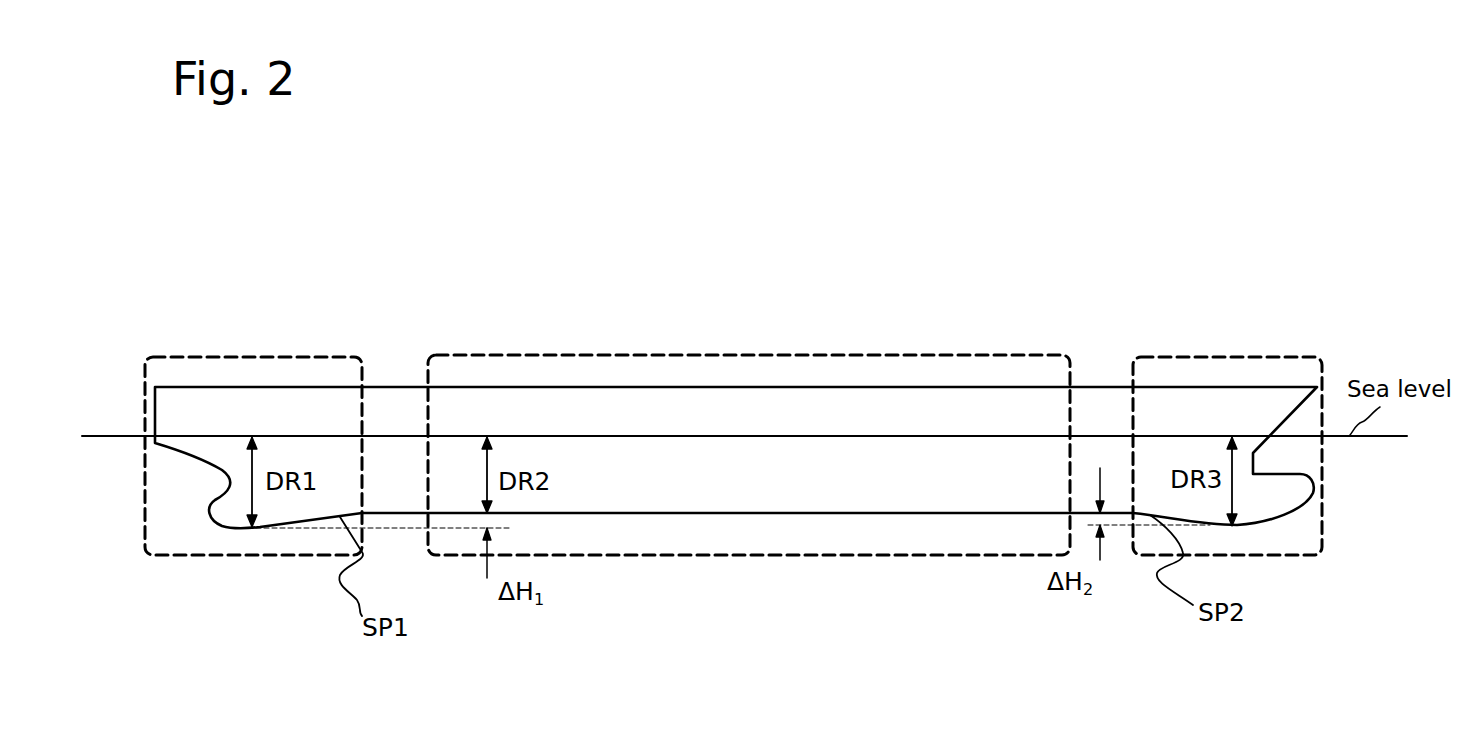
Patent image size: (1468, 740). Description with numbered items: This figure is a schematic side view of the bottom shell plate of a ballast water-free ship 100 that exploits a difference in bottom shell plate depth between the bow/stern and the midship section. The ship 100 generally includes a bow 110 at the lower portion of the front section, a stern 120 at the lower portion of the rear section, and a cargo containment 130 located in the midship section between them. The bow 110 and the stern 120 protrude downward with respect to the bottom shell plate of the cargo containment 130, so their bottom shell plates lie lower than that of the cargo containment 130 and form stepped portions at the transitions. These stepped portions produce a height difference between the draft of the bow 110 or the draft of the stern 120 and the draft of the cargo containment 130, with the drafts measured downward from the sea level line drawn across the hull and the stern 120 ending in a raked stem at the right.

The ballast water-free ship 100 is at (208, 229).
The bow 110 is at (245, 357).
The stern 120 is at (1232, 355).
The cargo containment 130 is at (755, 355).